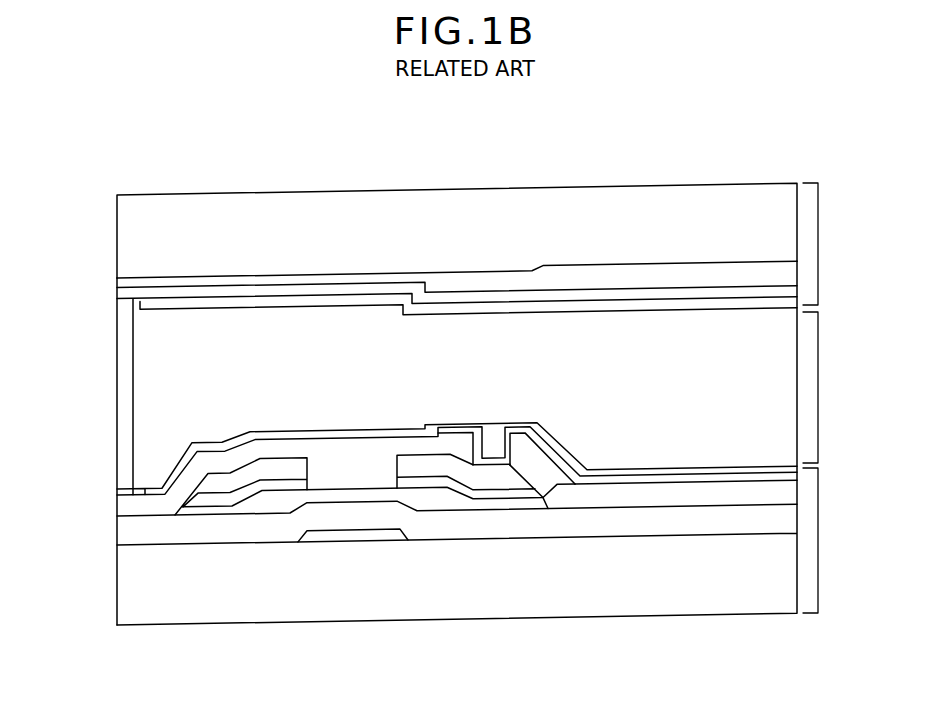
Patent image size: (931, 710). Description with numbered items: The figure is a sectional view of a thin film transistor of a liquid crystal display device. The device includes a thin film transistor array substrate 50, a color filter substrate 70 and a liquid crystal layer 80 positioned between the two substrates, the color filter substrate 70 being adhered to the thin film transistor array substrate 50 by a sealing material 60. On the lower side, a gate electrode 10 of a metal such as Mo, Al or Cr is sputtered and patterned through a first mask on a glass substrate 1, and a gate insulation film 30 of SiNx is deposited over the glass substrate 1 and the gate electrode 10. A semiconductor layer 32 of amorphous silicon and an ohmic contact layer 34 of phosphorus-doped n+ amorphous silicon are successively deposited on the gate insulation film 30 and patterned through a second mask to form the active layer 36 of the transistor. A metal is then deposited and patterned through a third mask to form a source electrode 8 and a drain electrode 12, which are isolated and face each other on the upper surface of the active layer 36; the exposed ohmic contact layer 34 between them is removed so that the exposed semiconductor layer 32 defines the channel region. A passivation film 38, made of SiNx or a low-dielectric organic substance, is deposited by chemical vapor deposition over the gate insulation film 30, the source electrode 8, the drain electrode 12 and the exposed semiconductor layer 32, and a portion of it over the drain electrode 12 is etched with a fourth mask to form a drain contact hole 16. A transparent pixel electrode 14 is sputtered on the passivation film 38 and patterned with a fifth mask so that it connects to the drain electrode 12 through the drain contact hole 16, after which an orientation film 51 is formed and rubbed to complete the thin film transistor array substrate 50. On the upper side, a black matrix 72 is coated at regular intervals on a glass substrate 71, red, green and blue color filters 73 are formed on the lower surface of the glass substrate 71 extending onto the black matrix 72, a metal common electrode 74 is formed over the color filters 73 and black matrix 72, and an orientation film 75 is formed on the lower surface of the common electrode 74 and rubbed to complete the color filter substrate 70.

The glass substrate 1 is at (125, 597).
The source electrode 8 is at (287, 467).
The gate electrode 10 is at (348, 535).
The drain electrode 12 is at (462, 473).
The pixel electrode 14 is at (672, 478).
The drain contact hole 16 is at (489, 442).
The gate insulation film 30 is at (125, 539).
The semiconductor layer 32 is at (542, 497).
The ohmic contact layer 34 is at (522, 455).
The active layer 36 is at (604, 451).
The passivation film 38 is at (128, 509).
The thin film transistor array substrate 50 is at (827, 540).
The orientation film 51 is at (138, 491).
The sealing material 60 is at (118, 413).
The color filter substrate 70 is at (827, 244).
The glass substrate 71 is at (130, 229).
The black matrix 72 is at (127, 283).
The color filters 73 is at (637, 277).
The common electrode 74 is at (128, 302).
The orientation film 75 is at (153, 307).
The liquid crystal layer 80 is at (827, 387).